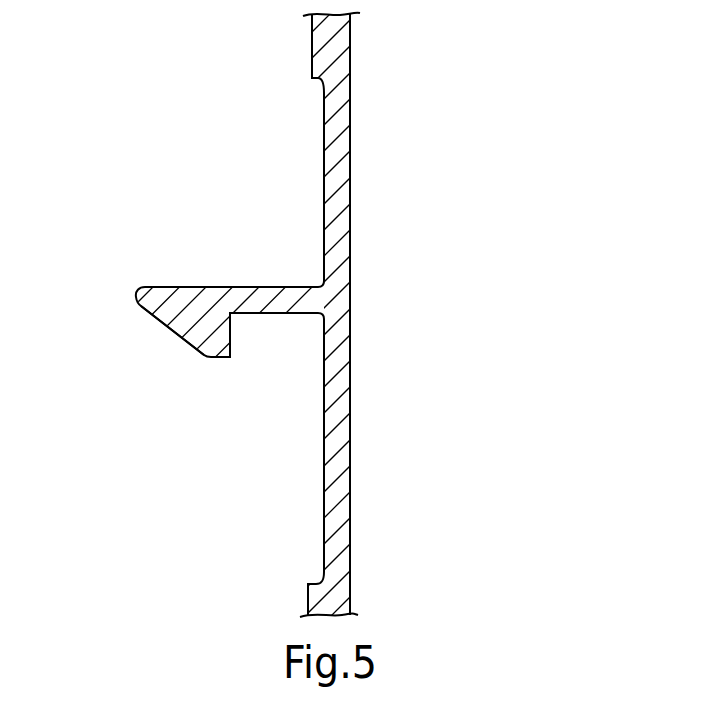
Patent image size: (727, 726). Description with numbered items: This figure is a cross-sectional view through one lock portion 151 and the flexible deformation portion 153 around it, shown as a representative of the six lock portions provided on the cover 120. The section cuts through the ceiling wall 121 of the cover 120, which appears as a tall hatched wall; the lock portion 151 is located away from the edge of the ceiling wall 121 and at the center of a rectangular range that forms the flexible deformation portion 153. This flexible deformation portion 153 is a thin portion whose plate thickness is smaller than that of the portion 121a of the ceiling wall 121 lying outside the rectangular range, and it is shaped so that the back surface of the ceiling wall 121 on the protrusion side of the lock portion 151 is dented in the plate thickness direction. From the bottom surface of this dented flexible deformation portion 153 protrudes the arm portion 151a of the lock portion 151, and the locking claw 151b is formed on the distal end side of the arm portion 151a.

The cover 120 is at (363, 363).
The ceiling wall 121 is at (363, 363).
The portion outside the rectangular range 121a is at (312, 37).
The flexible deformation portion 153 is at (324, 133).
The lock portion 151 is at (299, 363).
The arm portion 151a is at (254, 287).
The locking claw 151b is at (177, 335).